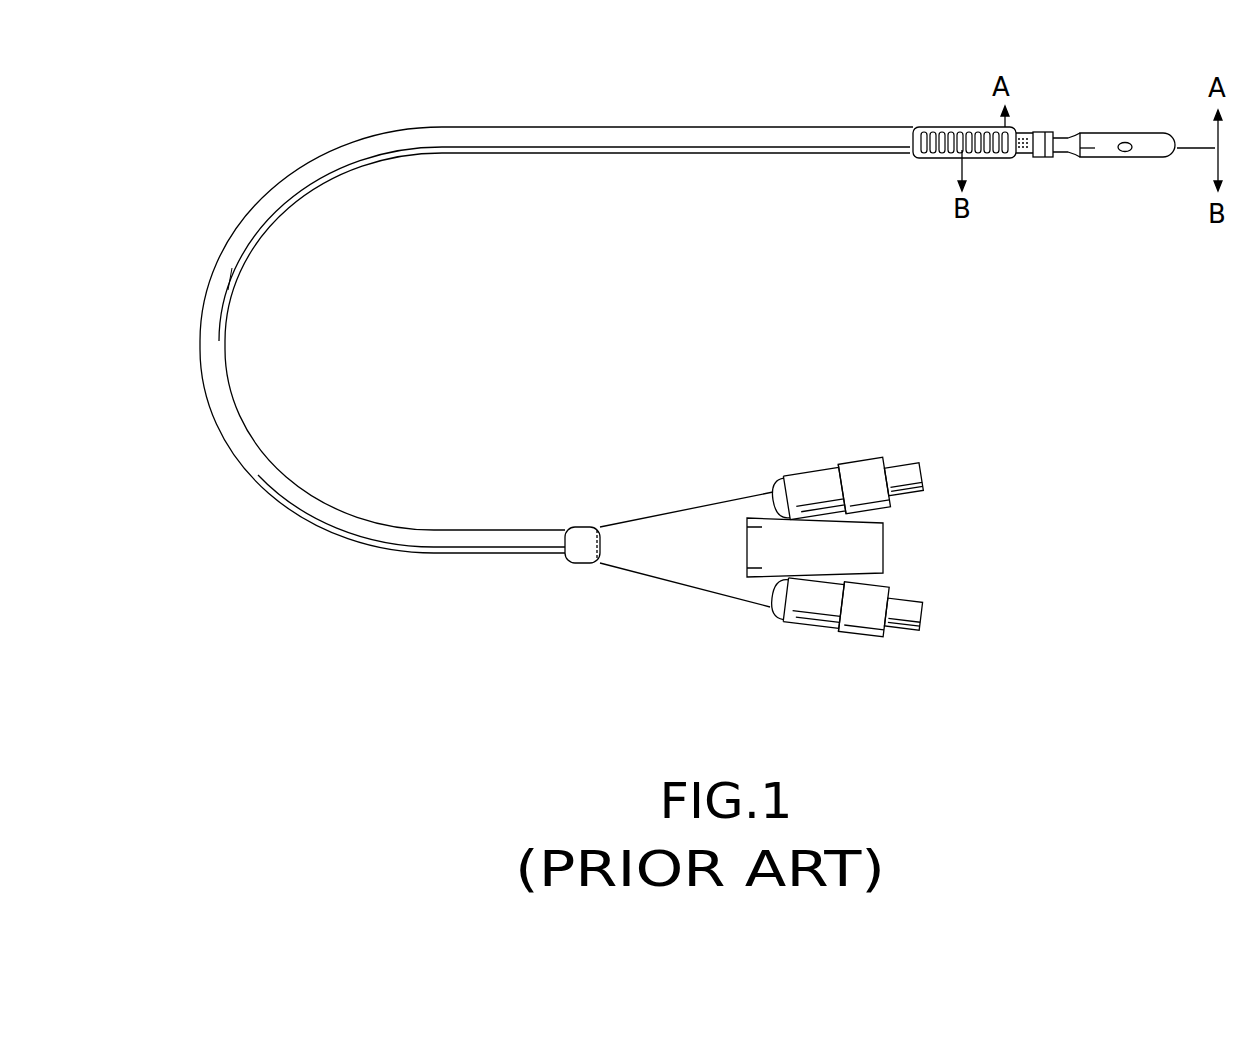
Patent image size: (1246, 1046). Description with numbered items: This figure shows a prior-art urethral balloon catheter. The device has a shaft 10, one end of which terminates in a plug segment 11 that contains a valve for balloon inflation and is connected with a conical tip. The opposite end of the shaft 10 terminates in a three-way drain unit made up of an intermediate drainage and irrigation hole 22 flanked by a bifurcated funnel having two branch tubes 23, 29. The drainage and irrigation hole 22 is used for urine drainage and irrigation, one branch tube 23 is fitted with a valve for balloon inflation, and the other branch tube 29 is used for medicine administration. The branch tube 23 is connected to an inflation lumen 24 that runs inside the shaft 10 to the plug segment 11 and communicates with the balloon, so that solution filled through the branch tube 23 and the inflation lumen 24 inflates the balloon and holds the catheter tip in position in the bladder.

The shaft 10 is at (428, 120).
The plug segment 11 is at (1038, 124).
The inflation lumen 24 is at (873, 158).
The drainage and irrigation hole 22 is at (886, 539).
The branch tube 23 is at (870, 467).
The branch tube of bifurcated funnel 29 is at (883, 589).